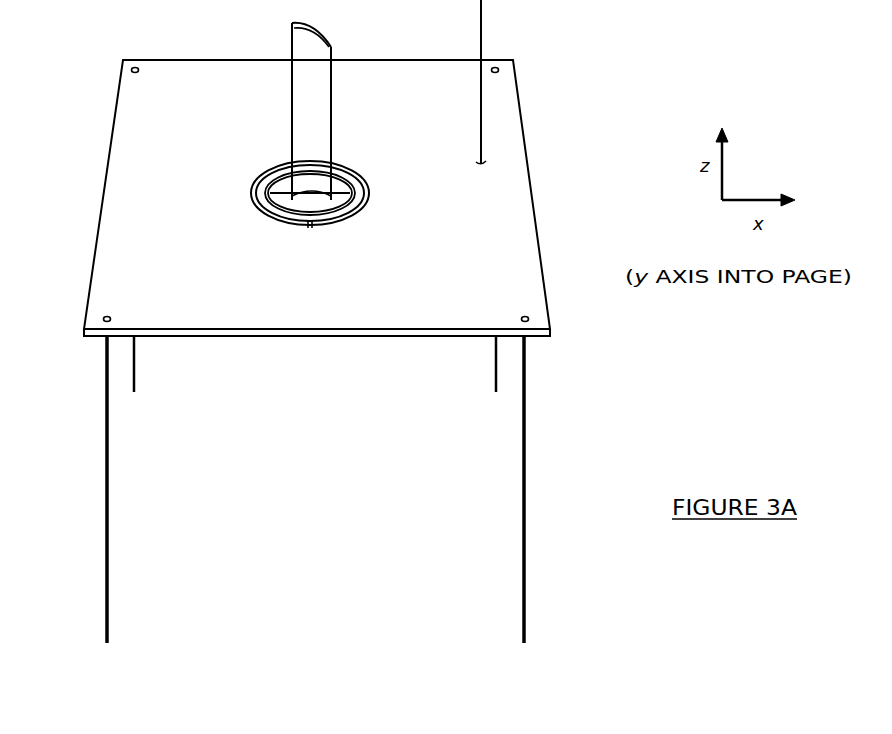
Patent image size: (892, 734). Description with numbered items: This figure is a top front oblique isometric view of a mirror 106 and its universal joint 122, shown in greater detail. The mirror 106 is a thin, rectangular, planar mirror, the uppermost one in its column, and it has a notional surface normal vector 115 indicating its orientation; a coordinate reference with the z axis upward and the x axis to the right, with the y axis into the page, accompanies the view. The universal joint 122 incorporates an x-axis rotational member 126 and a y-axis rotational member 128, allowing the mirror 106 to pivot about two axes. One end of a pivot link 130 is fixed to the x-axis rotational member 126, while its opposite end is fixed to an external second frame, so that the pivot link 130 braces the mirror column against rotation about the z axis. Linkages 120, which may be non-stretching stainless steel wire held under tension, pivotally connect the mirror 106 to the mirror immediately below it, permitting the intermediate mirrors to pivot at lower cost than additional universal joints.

The mirror 106 is at (105, 174).
The surface normal vector 115 is at (481, 26).
The linkages 120 is at (134, 365).
The universal joint 122 is at (368, 165).
The x-axis rotational member 126 is at (342, 205).
The y-axis rotational member 128 is at (310, 225).
The pivot link 130 is at (292, 115).